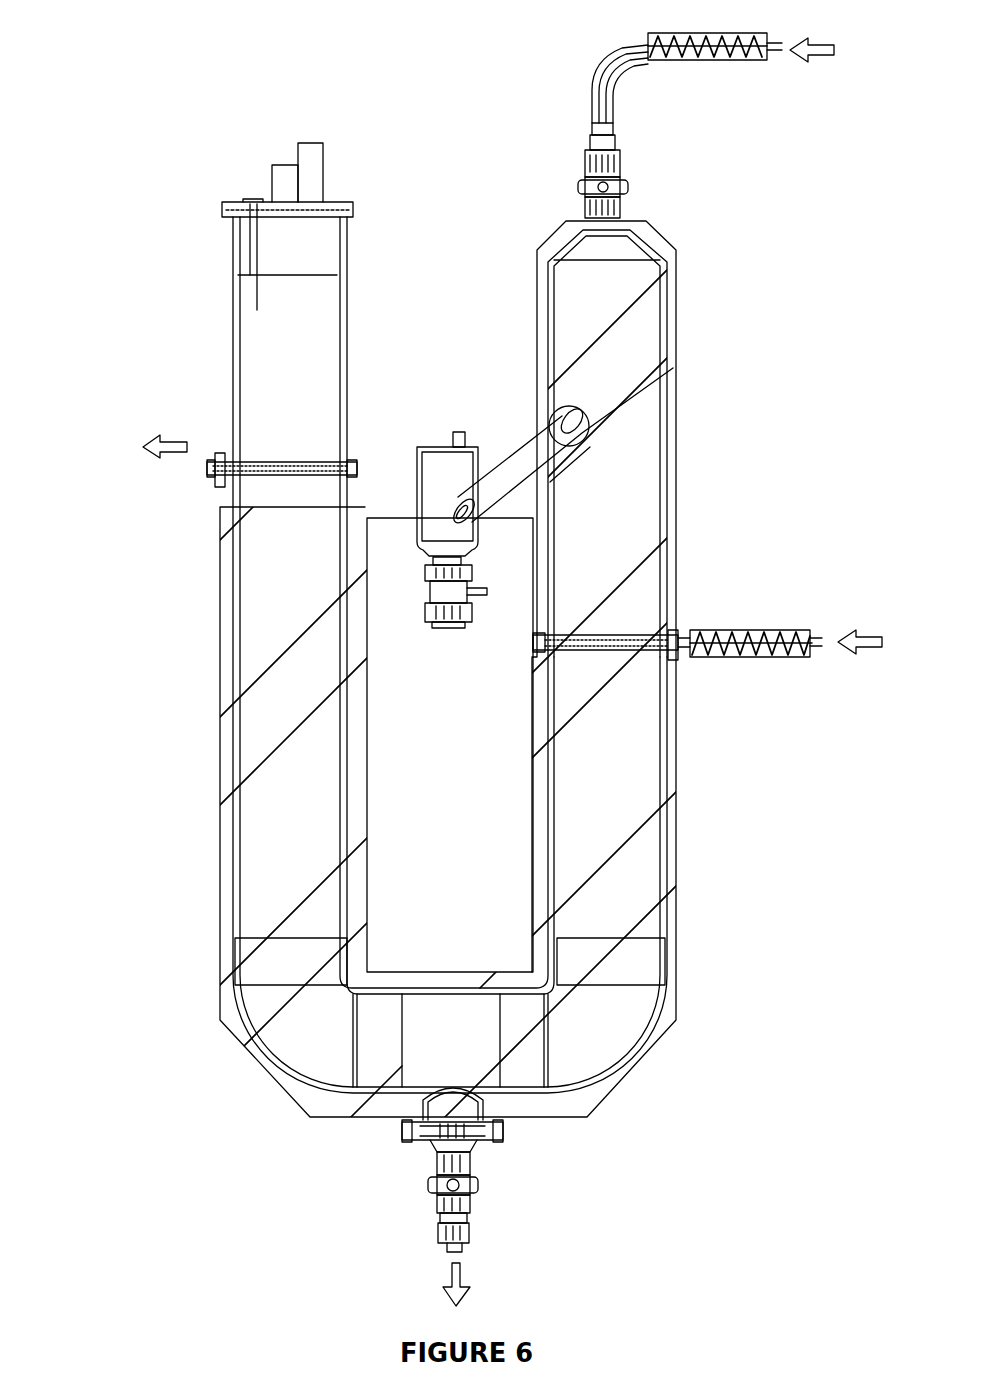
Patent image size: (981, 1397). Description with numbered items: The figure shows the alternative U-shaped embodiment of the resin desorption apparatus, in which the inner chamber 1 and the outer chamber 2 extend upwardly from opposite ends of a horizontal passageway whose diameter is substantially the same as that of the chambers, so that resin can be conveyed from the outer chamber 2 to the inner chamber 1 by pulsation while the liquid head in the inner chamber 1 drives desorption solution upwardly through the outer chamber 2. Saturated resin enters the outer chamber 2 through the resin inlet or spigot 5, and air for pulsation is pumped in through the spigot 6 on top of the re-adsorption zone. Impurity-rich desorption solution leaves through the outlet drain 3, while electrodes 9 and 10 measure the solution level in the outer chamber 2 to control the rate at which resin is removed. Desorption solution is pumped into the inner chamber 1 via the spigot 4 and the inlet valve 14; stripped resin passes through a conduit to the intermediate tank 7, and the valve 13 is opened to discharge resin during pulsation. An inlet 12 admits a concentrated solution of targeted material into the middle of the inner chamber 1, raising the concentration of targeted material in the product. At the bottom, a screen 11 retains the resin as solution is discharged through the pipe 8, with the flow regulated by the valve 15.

The inner chamber 1 is at (643, 843).
The outer chamber 2 is at (350, 890).
The outlet drain 3 is at (207, 470).
The spigot 4 is at (594, 118).
The resin inlet spigot 5 is at (287, 172).
The spigot 6 is at (316, 147).
The intermediate tank 7 is at (437, 445).
The pipe 8 is at (465, 1247).
The electrode 9 is at (252, 242).
The electrode 10 is at (258, 253).
The screen 11 is at (503, 1135).
The inlet 12 is at (697, 628).
The valve 13 is at (448, 630).
The inlet valve 14 is at (634, 176).
The valve 15 is at (423, 1187).